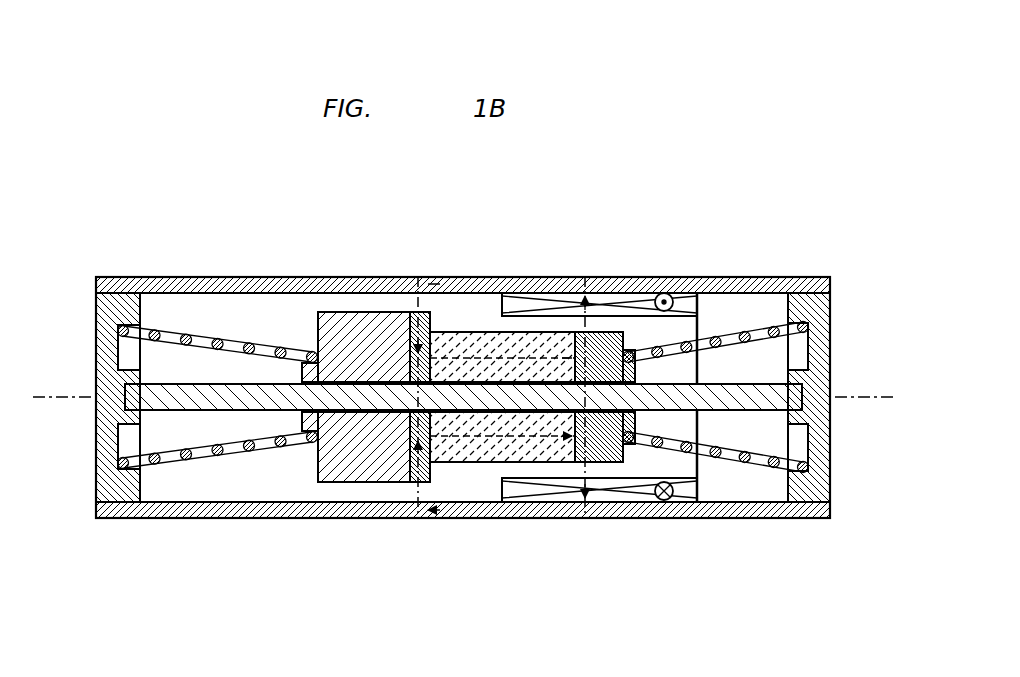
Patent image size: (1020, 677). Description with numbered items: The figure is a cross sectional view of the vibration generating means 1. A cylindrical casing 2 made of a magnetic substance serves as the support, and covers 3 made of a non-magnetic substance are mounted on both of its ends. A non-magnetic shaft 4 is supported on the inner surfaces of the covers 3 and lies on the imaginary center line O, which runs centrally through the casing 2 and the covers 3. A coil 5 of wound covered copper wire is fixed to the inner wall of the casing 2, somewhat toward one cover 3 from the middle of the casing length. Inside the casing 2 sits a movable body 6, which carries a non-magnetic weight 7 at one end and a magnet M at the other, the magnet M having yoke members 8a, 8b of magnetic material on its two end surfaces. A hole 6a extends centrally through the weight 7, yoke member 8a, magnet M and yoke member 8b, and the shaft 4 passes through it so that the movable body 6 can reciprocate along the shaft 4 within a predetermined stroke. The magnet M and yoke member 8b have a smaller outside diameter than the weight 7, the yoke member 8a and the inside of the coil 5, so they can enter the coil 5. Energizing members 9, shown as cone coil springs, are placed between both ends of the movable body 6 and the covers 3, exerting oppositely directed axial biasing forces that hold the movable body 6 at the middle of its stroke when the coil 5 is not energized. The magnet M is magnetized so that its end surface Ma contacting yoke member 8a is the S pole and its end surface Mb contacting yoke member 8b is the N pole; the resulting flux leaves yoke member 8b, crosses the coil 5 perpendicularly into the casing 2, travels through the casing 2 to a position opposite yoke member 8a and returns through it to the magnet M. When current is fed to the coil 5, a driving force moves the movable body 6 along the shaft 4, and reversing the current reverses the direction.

The vibration generating means 1 is at (414, 246).
The casing 2 is at (762, 284).
The cover 3 is at (108, 410).
The shaft 4 is at (229, 400).
The coil 5 is at (598, 300).
The movable body 6 is at (617, 584).
The hole 6a is at (300, 380).
The weight 7 is at (365, 473).
The yoke member 8a is at (432, 468).
The yoke member 8b is at (604, 452).
The energizing member 9 is at (152, 467).
The magnet M is at (512, 452).
The end surface Ma is at (405, 362).
The end surface Mb is at (606, 345).
The center line O is at (463, 399).